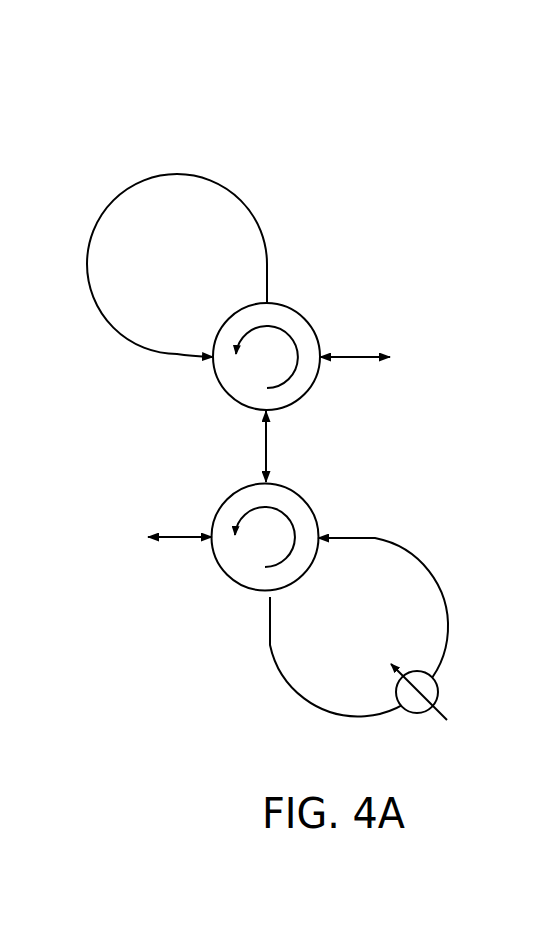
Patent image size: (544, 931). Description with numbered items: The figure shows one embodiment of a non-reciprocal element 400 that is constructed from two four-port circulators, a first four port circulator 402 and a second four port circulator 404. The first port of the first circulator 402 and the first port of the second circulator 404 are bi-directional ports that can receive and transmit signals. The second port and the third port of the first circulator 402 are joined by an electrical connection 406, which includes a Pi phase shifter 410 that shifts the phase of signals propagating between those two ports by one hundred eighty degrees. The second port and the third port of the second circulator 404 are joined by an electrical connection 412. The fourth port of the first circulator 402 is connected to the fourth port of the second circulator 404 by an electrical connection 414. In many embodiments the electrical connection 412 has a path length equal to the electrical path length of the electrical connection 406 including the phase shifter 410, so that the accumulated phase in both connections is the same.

The non-reciprocal element 400 is at (328, 121).
The first four port circulator 402 is at (305, 500).
The second four port circulator 404 is at (312, 325).
The electrical connection 406 is at (435, 588).
The Pi phase shifter 410 is at (440, 692).
The electrical connection 412 is at (193, 170).
The electrical connection 414 is at (268, 443).